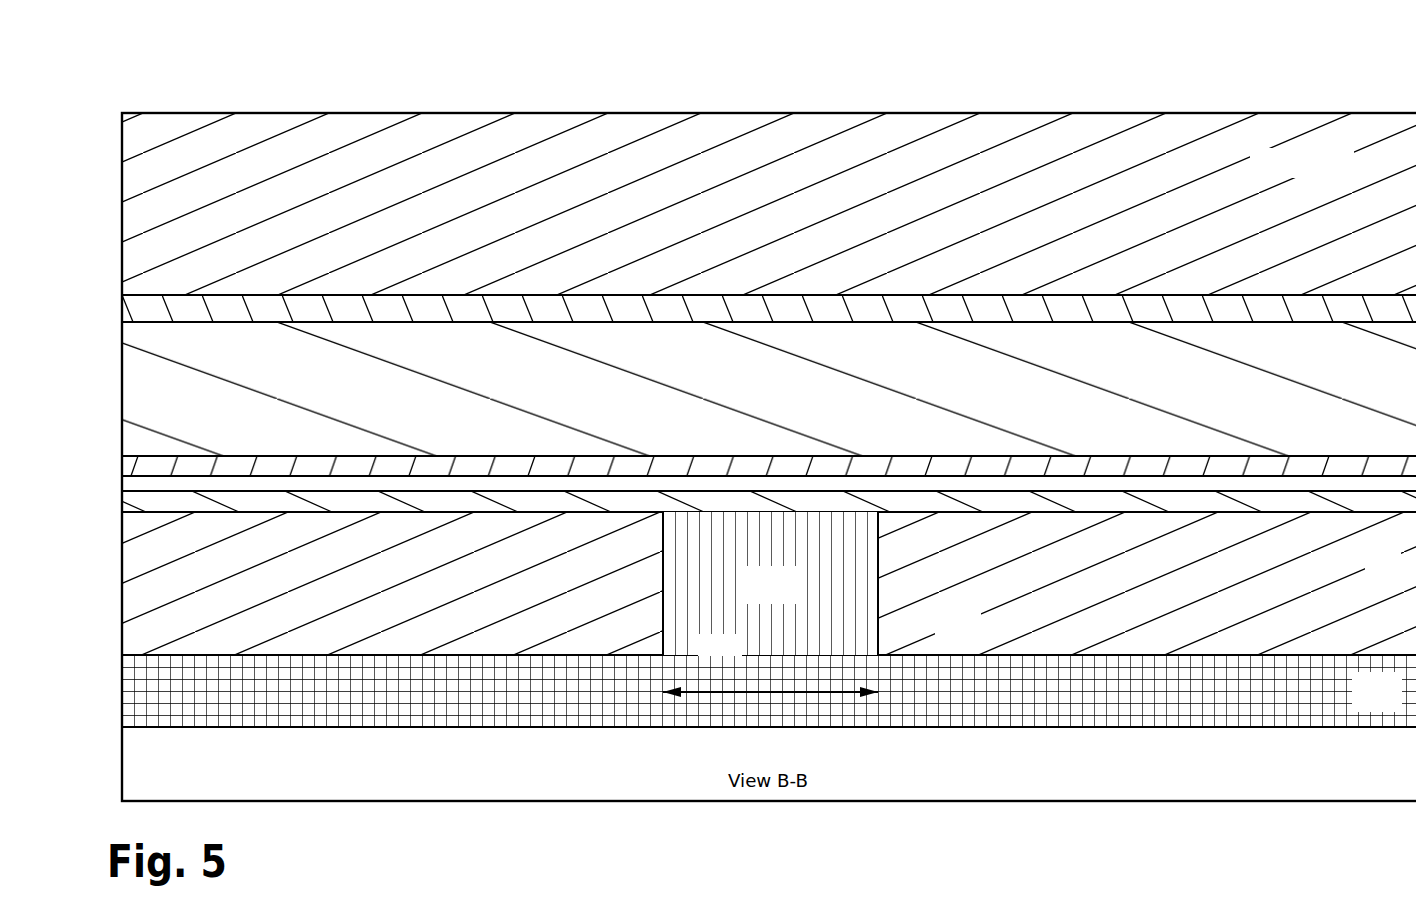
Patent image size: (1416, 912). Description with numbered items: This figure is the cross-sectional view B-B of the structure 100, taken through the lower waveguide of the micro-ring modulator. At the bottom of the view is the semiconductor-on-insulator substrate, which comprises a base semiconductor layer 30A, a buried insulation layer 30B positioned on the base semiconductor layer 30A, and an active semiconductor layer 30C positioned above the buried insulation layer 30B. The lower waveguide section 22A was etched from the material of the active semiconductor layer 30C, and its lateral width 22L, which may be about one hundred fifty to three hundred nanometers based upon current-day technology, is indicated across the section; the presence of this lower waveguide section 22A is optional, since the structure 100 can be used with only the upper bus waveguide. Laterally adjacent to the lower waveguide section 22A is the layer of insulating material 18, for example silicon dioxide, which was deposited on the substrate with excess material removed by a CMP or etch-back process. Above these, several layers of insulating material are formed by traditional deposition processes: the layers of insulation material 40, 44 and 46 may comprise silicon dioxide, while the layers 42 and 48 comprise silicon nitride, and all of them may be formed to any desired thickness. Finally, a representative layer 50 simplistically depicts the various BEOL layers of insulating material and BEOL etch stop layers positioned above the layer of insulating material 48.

The structure 100 is at (229, 83).
The representative layer 50 is at (1262, 174).
The layer of insulating material 48 is at (130, 313).
The layer of insulation material 46 is at (1361, 392).
The layer of insulation material 44 is at (130, 465).
The layer of insulating material 42 is at (130, 487).
The layer of insulation material 40 is at (128, 508).
The layer of insulating material 18 is at (1370, 572).
The lower waveguide section 22A is at (759, 596).
The lateral width 22L is at (752, 693).
The active semiconductor layer 30C is at (862, 572).
The buried insulation layer 30B is at (1364, 704).
The base semiconductor layer 30A is at (1364, 780).